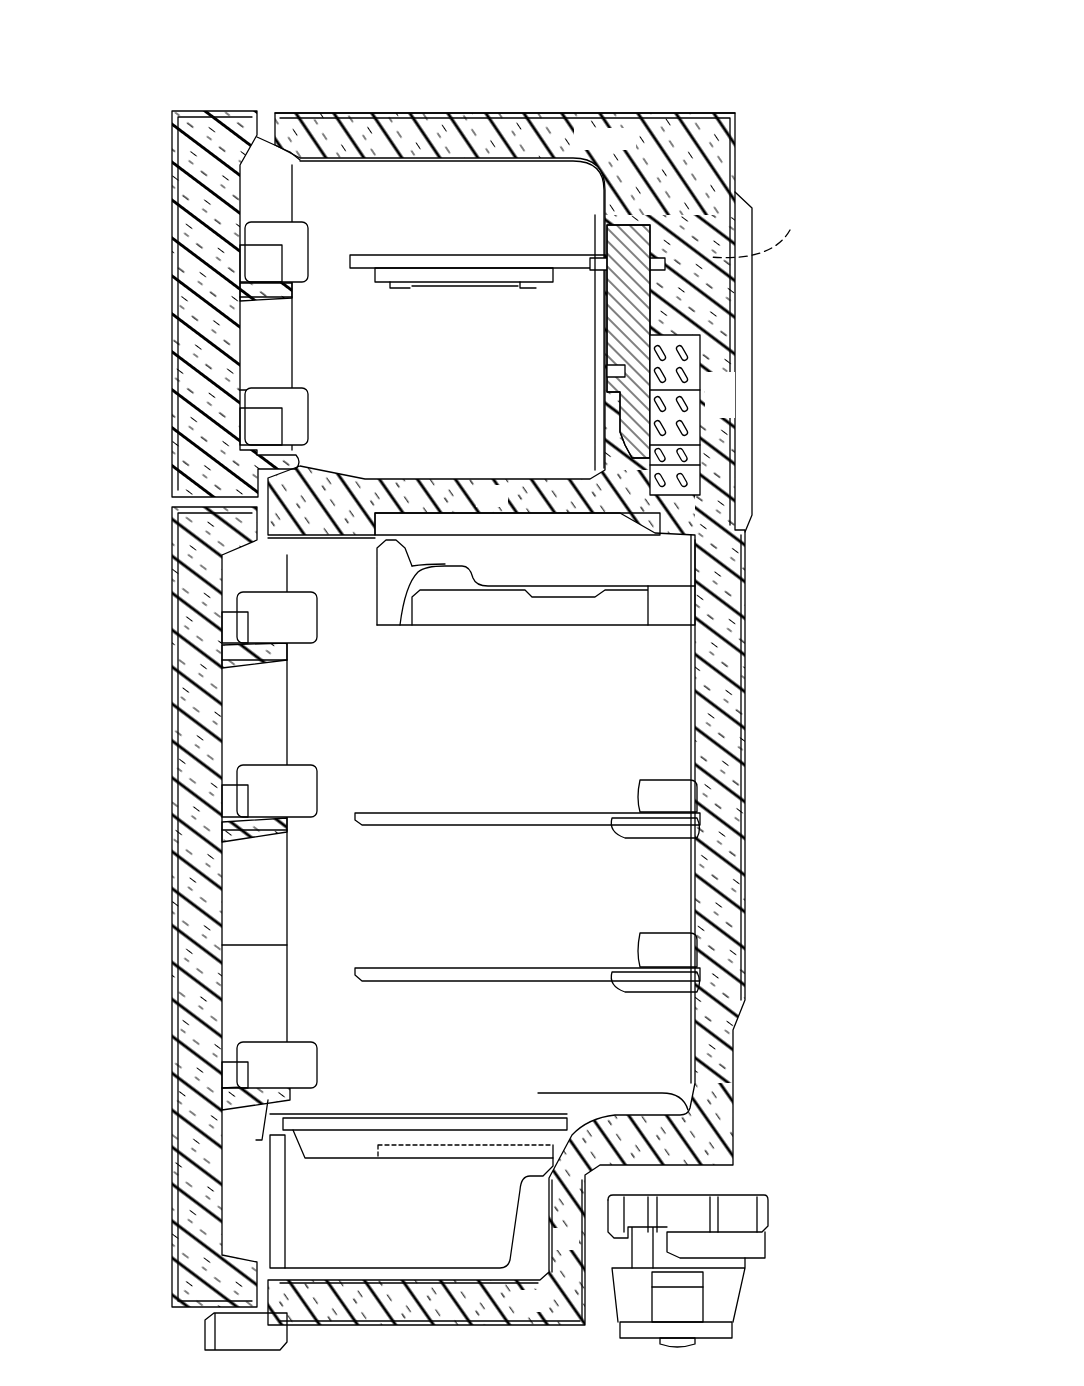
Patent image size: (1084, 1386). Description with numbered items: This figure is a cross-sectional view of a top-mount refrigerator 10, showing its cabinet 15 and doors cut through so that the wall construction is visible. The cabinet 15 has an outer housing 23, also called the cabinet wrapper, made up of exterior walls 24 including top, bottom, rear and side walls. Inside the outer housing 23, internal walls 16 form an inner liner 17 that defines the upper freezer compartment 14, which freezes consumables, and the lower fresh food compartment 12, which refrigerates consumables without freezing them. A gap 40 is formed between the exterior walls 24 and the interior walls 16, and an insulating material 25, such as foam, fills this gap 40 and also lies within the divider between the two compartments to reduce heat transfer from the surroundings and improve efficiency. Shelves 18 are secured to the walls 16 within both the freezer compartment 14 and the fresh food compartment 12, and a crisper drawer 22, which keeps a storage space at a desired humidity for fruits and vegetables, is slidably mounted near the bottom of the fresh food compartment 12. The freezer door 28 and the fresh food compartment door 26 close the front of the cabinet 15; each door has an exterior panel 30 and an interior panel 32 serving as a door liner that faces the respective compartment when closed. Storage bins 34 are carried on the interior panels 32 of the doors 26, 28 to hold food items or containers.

The refrigerator 10 is at (562, 54).
The fresh food compartment 12 is at (476, 720).
The freezer compartment 14 is at (431, 385).
The cabinet 15 is at (661, 116).
The internal walls 16 is at (372, 186).
The inner liner 17 is at (660, 668).
The shelves 18 is at (428, 255).
The crisper drawer 22 is at (290, 1192).
The outer housing 23 is at (601, 107).
The exterior walls 24 is at (458, 112).
The insulating material 25 is at (634, 150).
The fresh food compartment door 26 is at (176, 930).
The freezer door 28 is at (176, 205).
The exterior panel 30 is at (172, 315).
The interior panel 32 is at (248, 358).
The storage bins 34 is at (292, 250).
The gap 40 is at (709, 418).